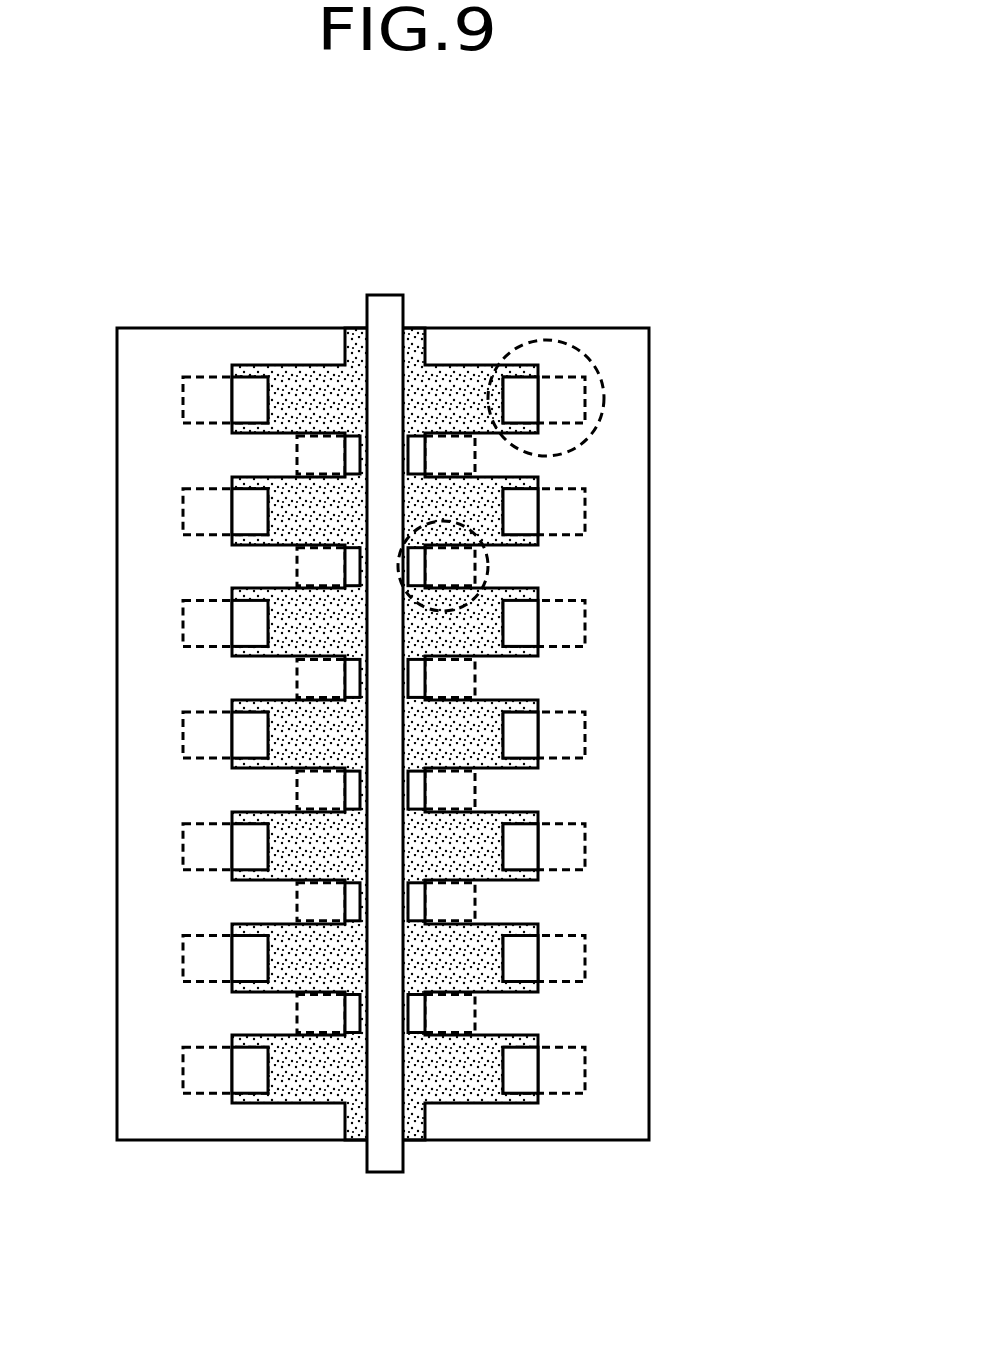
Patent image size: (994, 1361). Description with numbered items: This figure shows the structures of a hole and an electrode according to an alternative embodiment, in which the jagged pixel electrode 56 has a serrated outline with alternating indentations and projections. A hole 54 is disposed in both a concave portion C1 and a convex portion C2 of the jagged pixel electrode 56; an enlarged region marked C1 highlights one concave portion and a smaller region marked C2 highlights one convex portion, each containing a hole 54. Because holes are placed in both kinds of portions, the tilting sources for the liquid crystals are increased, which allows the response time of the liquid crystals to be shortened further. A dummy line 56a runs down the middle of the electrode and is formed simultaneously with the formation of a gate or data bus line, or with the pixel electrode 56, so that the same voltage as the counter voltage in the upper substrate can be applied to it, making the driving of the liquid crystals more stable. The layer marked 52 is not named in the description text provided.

The pixel electrode 56 is at (635, 580).
The conductive pattern layer 52 is at (413, 1130).
The hole 54 is at (433, 675).
The dummy line 56a is at (383, 1160).
The concave portion C1 is at (603, 398).
The convex portion C2 is at (488, 560).